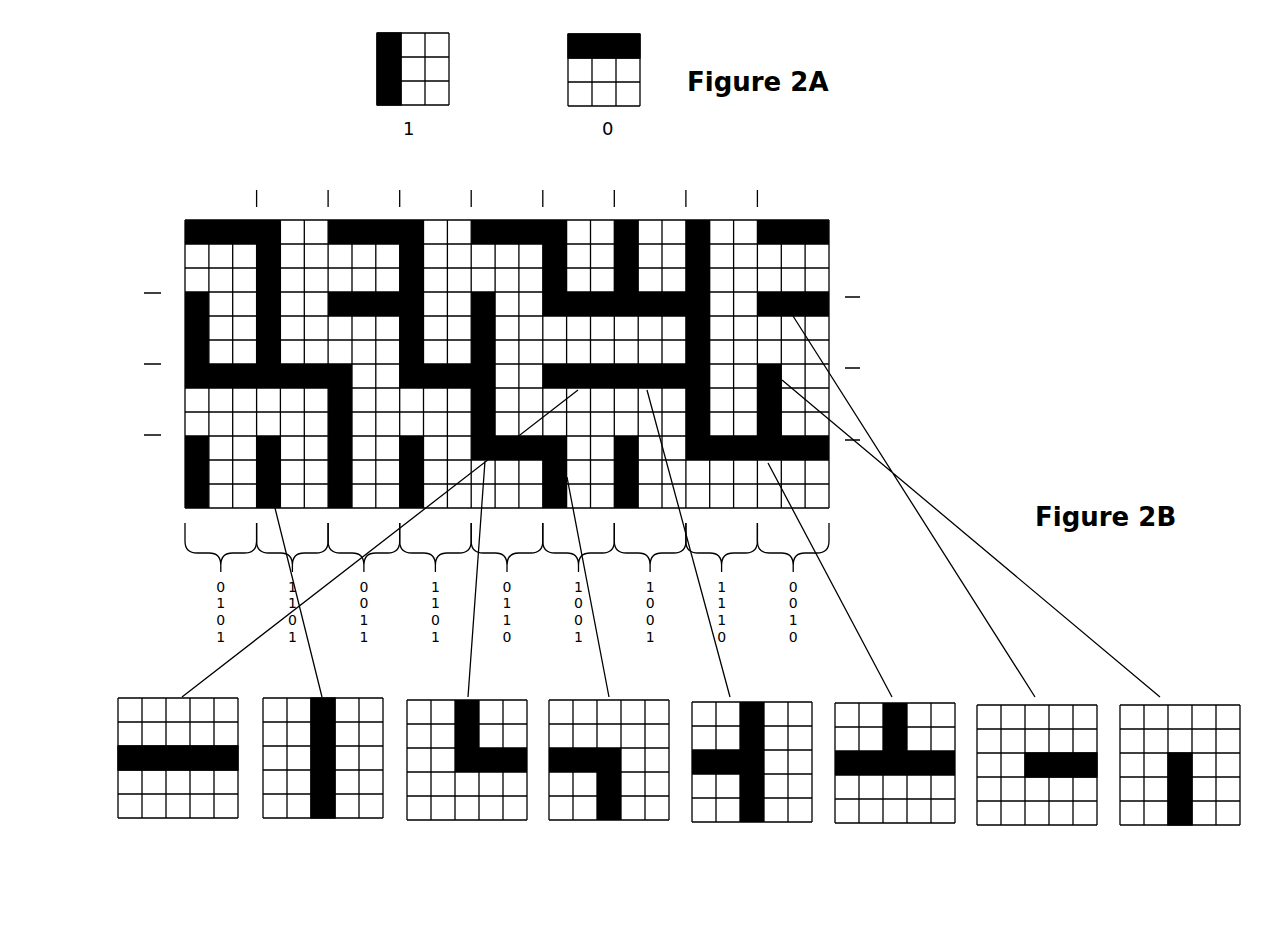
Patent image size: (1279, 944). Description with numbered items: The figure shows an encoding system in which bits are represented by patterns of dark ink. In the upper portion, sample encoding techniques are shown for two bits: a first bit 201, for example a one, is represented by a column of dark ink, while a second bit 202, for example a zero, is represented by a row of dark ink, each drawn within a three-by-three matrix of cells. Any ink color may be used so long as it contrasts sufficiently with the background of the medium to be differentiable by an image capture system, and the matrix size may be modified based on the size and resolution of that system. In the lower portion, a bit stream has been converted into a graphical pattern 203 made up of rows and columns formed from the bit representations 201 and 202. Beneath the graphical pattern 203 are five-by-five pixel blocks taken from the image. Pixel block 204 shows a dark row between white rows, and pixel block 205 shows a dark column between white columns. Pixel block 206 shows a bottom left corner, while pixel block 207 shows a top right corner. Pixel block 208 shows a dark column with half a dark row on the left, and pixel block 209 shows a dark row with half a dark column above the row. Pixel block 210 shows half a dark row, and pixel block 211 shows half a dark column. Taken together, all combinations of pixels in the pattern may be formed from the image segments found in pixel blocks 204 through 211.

In FIG. 2A, the first bit 201 is at (377, 68).
In FIG. 2A, the second bit 202 is at (567, 67).
In FIG. 2B, the graphical pattern 203 is at (917, 227).
In FIG. 2B, the pixel block 204 is at (203, 818).
In FIG. 2B, the pixel block 205 is at (348, 818).
In FIG. 2B, the pixel block 206 is at (492, 820).
In FIG. 2B, the pixel block 207 is at (634, 820).
In FIG. 2B, the pixel block 208 is at (777, 822).
In FIG. 2B, the pixel block 209 is at (920, 823).
In FIG. 2B, the pixel block 210 is at (1062, 825).
In FIG. 2B, the pixel block 211 is at (1205, 825).